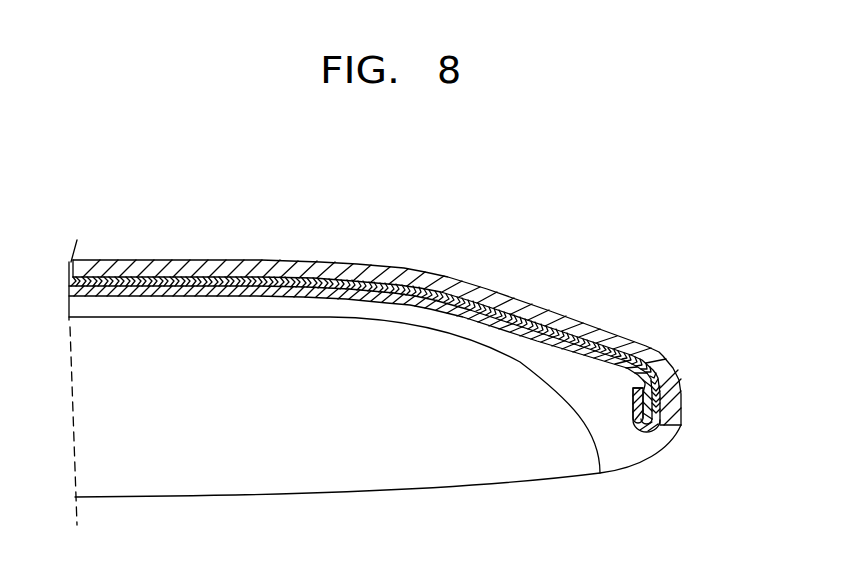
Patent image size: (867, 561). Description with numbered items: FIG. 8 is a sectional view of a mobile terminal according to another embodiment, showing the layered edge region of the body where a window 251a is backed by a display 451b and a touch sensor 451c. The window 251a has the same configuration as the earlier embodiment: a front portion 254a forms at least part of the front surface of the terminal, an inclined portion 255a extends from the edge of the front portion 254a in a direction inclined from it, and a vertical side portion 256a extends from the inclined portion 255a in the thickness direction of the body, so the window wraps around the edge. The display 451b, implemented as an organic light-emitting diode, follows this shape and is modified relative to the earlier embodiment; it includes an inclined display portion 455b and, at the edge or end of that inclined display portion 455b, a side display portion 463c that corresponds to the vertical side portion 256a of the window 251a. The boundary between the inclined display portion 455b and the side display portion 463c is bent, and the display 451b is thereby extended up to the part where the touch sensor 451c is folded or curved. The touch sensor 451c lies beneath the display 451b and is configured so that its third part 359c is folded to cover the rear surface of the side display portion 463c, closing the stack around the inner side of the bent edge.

The window 251a is at (297, 255).
The front portion 254a is at (120, 268).
The inclined portion 255a is at (452, 283).
The vertical side portion 256a is at (672, 407).
The display 451b is at (243, 280).
The touch sensor 451c is at (546, 337).
The inclined display portion 455b is at (600, 343).
The side display portion 463c is at (663, 391).
The third part 359c is at (629, 424).